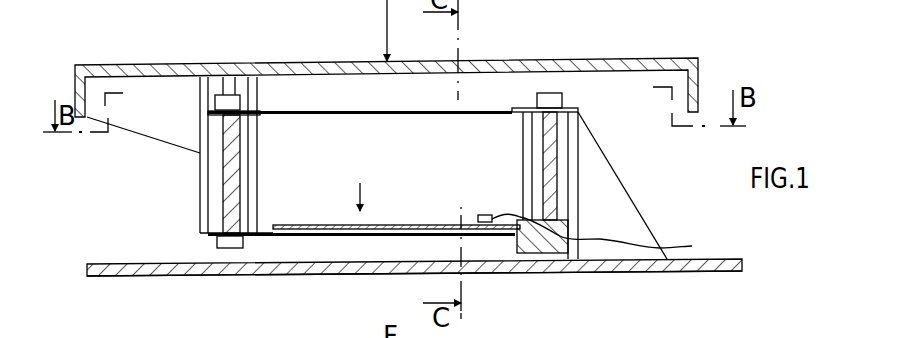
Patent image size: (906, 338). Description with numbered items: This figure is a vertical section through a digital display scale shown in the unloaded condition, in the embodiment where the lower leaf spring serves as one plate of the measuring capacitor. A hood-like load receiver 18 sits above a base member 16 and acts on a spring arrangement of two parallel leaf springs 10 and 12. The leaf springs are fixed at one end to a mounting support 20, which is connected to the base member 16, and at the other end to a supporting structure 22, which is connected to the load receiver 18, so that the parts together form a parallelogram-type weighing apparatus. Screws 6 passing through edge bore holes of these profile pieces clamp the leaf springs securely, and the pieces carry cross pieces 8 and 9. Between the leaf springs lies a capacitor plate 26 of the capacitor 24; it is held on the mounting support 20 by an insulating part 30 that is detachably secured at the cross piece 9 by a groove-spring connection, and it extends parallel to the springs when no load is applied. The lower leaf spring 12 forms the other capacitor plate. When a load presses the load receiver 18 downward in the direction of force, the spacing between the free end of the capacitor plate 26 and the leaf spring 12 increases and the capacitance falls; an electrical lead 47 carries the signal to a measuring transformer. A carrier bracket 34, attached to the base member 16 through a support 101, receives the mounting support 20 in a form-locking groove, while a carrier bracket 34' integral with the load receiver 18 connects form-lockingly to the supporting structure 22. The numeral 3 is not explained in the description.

The sensor element 3 is at (485, 214).
The screw 6 is at (215, 103).
The cross piece 8 is at (230, 200).
The cross piece 9 is at (548, 126).
The leaf spring 10 is at (352, 114).
The leaf spring 12 is at (338, 268).
The base member 16 is at (735, 263).
The load receiver 18 is at (560, 60).
The mounting support 20 is at (557, 156).
The supporting structure 22 is at (214, 131).
The capacitor 24 is at (364, 181).
The capacitor plate 26 is at (310, 225).
The insulating part 30 is at (566, 223).
The carrier bracket 34 is at (586, 185).
The carrier bracket 34' is at (200, 167).
The electrical lead 47 is at (691, 247).
The support 101 is at (612, 195).